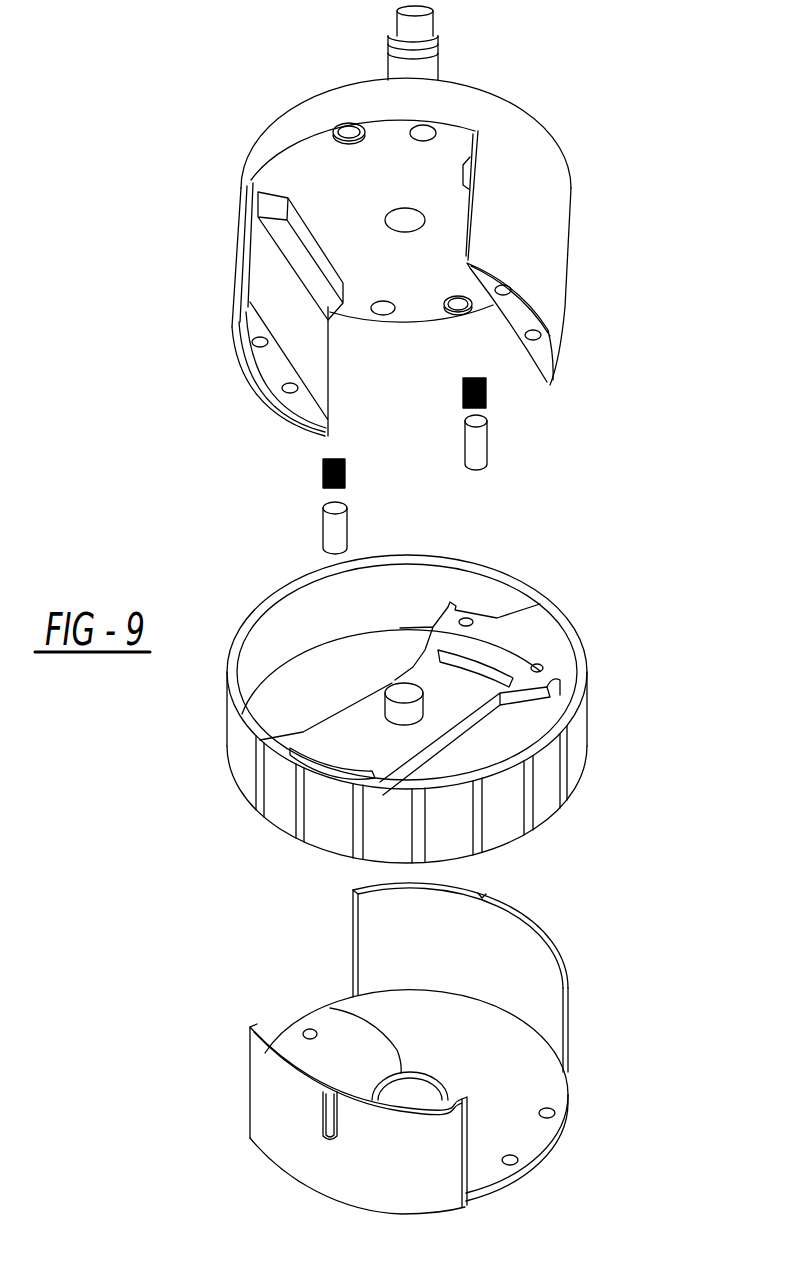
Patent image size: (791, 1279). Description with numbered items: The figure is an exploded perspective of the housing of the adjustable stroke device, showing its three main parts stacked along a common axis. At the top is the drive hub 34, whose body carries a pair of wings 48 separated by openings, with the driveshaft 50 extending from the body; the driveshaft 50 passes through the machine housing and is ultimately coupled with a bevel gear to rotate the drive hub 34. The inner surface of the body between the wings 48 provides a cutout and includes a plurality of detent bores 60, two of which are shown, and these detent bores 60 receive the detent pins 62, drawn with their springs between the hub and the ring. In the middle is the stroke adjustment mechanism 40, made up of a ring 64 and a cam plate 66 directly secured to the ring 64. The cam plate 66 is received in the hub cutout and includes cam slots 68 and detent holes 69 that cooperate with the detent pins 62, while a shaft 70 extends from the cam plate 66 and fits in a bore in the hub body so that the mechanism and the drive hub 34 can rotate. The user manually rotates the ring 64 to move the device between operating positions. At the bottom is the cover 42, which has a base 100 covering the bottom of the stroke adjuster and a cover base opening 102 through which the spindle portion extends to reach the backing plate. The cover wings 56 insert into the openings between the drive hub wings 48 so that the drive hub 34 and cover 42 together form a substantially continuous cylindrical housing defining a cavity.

The drive hub 34 is at (213, 215).
The stroke adjustment mechanism 40 is at (273, 115).
The cover 42 is at (610, 1112).
The wings 48 is at (567, 305).
The driveshaft 50 is at (398, 62).
The cover wings 56 is at (572, 1007).
The detent bores 60 is at (428, 133).
The detent pins 62 is at (478, 437).
The ring 64 is at (588, 701).
The cam plate 66 is at (448, 717).
The cam slots 68 is at (473, 622).
The detent holes 69 is at (503, 663).
The shaft 70 is at (407, 693).
The base 100 is at (552, 1153).
The cover base opening 102 is at (327, 1012).